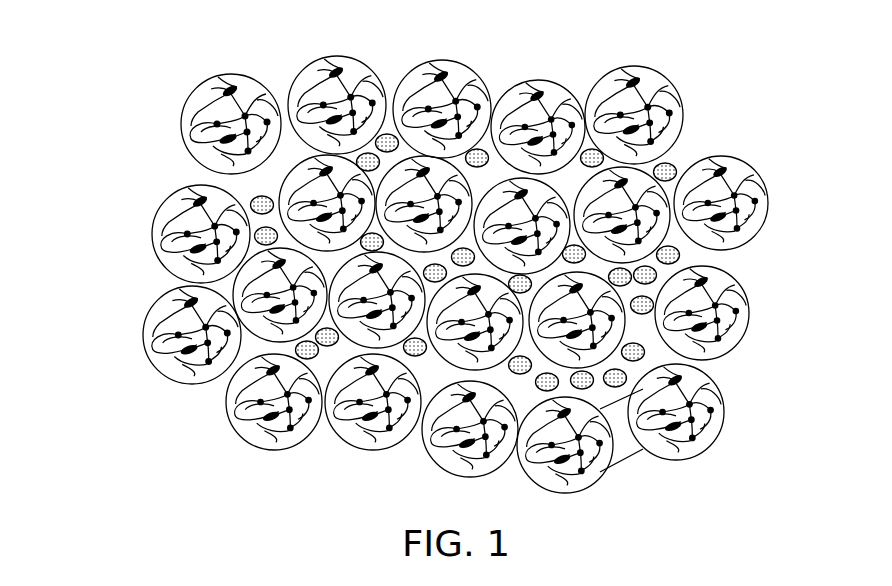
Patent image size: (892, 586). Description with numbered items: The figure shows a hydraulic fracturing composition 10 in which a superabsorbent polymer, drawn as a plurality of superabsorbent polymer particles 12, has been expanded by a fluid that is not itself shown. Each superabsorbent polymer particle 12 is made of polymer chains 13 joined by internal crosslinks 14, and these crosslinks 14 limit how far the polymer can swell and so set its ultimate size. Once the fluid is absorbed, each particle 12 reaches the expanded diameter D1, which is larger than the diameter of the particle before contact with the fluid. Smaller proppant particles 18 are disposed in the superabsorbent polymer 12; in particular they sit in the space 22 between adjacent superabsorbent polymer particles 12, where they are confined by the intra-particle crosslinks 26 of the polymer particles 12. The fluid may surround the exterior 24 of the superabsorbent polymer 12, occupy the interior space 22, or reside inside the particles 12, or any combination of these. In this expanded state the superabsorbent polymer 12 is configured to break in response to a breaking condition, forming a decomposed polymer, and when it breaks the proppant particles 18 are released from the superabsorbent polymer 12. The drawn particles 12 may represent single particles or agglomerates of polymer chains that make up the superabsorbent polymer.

The hydraulic fracturing composition 10 is at (118, 26).
The expanded diameter D1 is at (280, 110).
The superabsorbent polymer particle 12 is at (747, 161).
The polymer chain 13 is at (170, 320).
The internal crosslink 14 is at (195, 380).
The proppant particle 18 is at (680, 256).
The space 22 is at (252, 184).
The exterior 24 is at (107, 230).
The intra-particle crosslink 26 is at (618, 465).